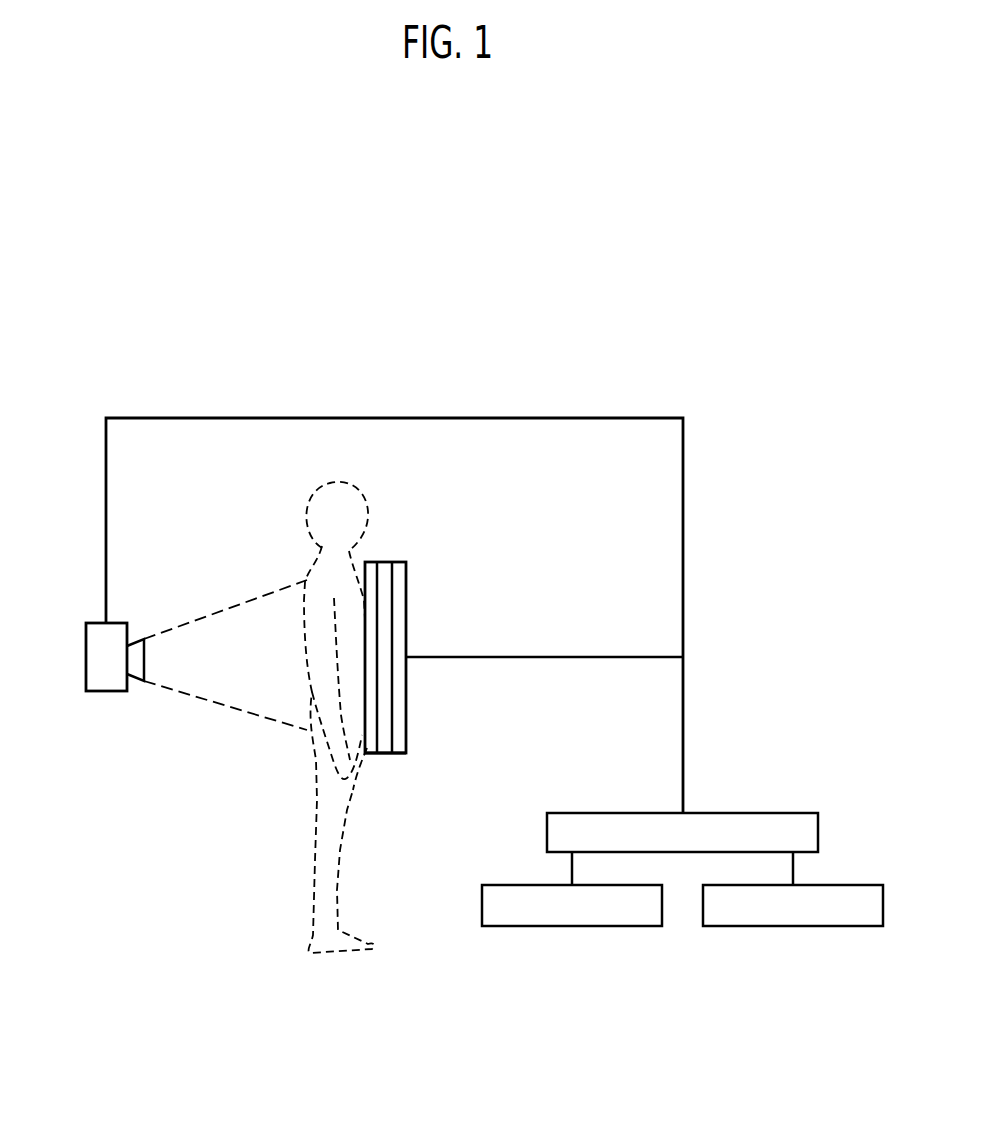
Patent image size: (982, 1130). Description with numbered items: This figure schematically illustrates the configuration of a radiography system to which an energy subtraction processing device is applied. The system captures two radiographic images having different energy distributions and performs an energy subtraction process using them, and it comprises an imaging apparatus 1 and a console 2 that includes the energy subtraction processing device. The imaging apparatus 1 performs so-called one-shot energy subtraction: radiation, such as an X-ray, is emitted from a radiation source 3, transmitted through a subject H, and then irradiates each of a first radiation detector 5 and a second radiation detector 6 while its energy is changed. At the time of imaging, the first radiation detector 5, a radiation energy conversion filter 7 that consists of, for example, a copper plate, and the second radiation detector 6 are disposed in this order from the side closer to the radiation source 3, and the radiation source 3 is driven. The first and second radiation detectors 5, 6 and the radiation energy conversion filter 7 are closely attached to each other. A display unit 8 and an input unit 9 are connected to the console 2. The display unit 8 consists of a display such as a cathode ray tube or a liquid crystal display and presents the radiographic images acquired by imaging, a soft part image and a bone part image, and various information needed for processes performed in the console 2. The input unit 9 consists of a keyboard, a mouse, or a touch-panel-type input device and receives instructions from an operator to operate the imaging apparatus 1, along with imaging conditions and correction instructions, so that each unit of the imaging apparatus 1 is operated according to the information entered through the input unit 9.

The imaging apparatus 1 is at (144, 388).
The console 2 is at (818, 828).
The radiation source 3 is at (85, 651).
The first radiation detector 5 is at (370, 562).
The second radiation detector 6 is at (400, 562).
The radiation energy conversion filter 7 is at (383, 753).
The display unit 8 is at (614, 926).
The input unit 9 is at (835, 926).
The subject H is at (318, 490).